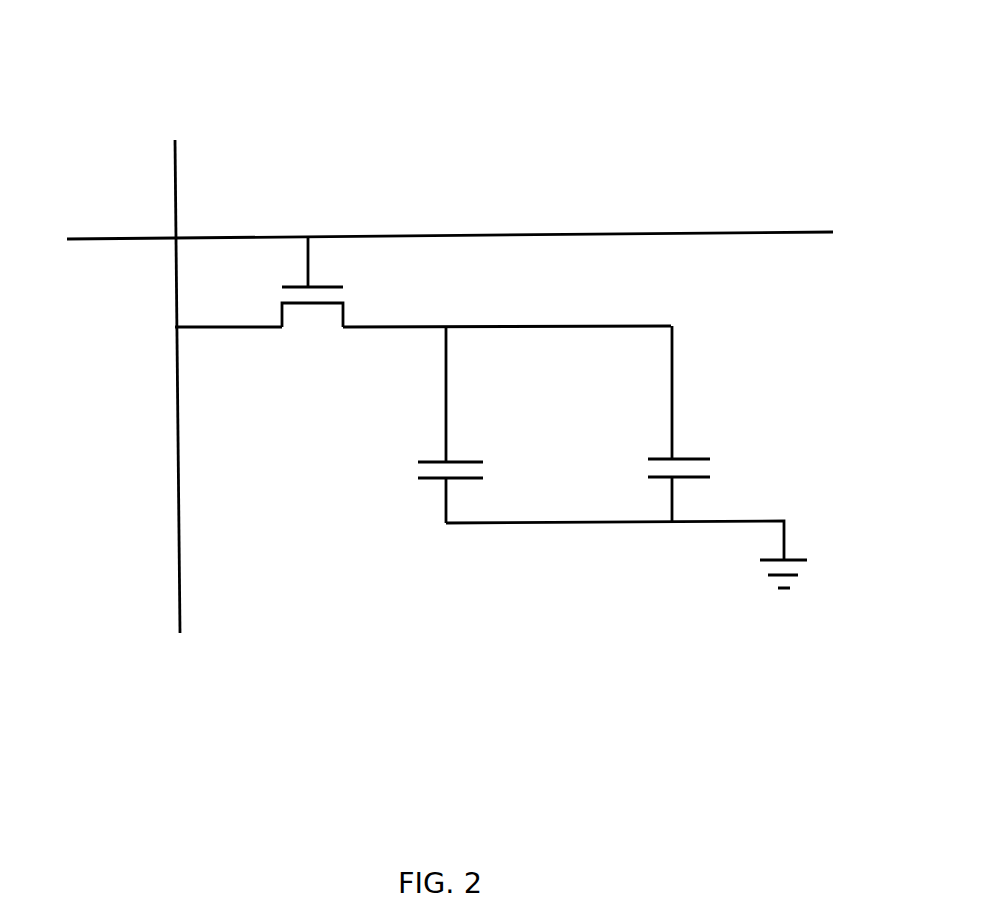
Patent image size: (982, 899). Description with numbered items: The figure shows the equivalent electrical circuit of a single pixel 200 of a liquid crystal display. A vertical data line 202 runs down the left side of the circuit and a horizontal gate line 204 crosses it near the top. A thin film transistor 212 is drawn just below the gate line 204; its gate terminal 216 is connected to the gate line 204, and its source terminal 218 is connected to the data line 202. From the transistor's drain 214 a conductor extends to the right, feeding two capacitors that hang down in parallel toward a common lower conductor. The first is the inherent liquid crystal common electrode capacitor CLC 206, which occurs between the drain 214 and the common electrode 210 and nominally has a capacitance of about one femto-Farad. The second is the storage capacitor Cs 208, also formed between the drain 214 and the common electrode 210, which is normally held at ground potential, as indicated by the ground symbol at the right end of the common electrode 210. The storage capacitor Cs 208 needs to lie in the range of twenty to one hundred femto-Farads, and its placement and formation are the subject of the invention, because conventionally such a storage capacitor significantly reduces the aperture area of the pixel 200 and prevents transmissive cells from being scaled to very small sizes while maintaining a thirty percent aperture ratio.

The pixel 200 is at (460, 37).
The data line 202 is at (175, 200).
The gate line 204 is at (702, 233).
The liquid crystal common electrode capacitor CLC 206 is at (432, 460).
The storage capacitor Cs 208 is at (698, 457).
The common electrode 210 is at (557, 523).
The thin film transistor 212 is at (389, 318).
The drain 214 is at (417, 328).
The gate electrode 216 is at (294, 286).
The source electrode 218 is at (222, 328).